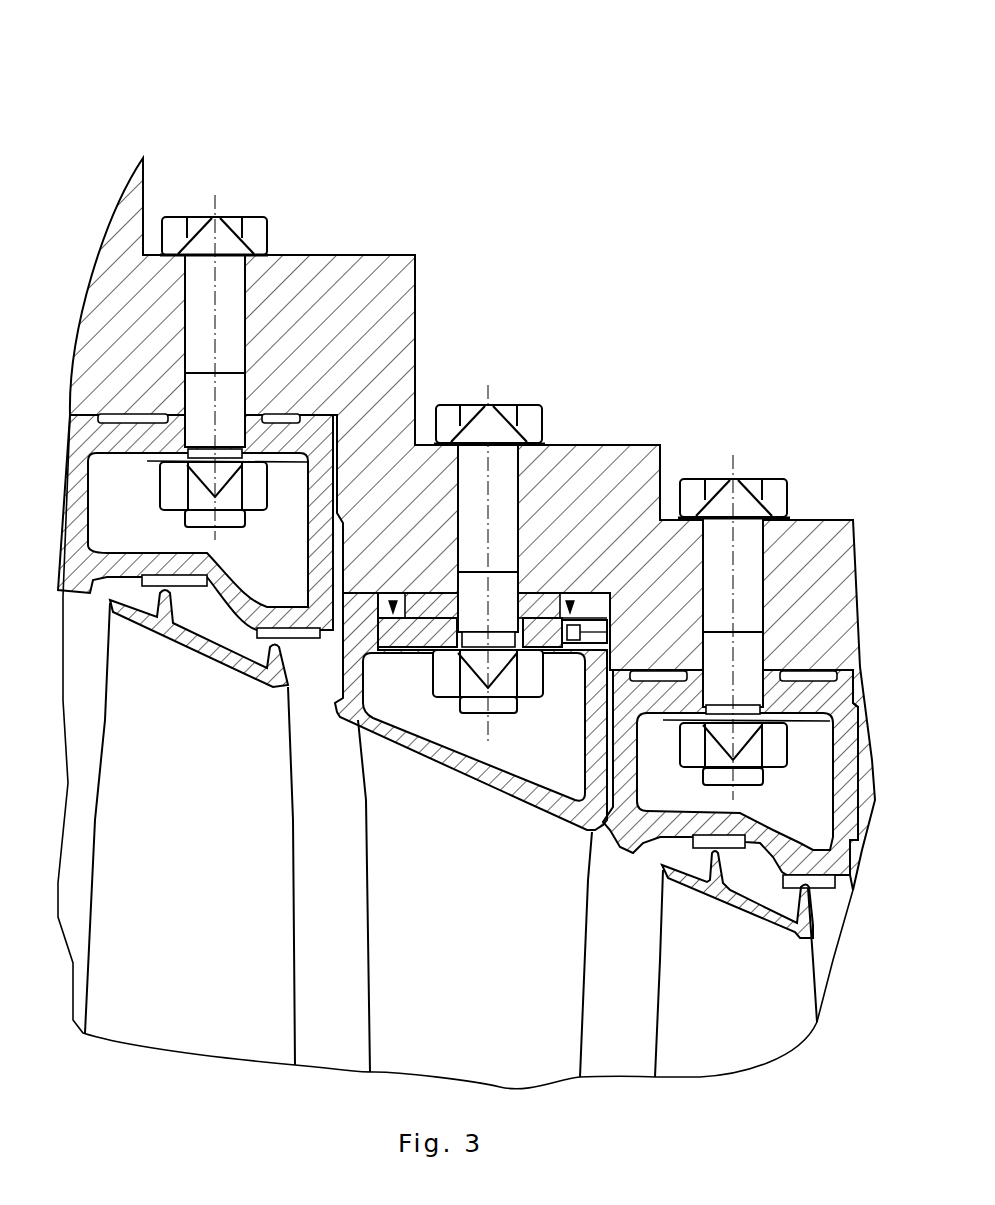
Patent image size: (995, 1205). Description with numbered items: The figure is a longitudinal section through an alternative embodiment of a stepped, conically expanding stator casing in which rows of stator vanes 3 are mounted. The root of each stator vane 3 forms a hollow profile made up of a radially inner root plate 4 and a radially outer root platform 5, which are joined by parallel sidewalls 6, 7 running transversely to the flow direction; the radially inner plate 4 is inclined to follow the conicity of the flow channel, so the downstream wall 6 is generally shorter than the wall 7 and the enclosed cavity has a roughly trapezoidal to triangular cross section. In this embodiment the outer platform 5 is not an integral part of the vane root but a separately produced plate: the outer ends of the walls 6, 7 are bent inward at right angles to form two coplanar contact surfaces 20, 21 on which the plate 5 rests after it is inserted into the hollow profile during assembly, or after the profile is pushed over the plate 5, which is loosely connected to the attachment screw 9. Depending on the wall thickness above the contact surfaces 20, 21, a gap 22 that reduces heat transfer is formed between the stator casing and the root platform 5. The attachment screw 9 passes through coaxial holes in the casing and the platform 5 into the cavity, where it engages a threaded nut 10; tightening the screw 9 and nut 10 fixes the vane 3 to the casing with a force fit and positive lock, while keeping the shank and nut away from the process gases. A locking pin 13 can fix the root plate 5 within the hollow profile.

The stator vane 3 is at (413, 820).
The radially inner root plate 4 is at (430, 747).
The radially outer root platform 5 is at (436, 600).
The downstream sidewall 6 is at (301, 440).
The sidewall 7 is at (665, 552).
The attachment screw 9 is at (450, 413).
The threaded nut 10 is at (548, 620).
The locking pin 13 is at (588, 627).
The contact surface 20 is at (393, 600).
The contact surface 21 is at (572, 603).
The gap 22 is at (533, 603).